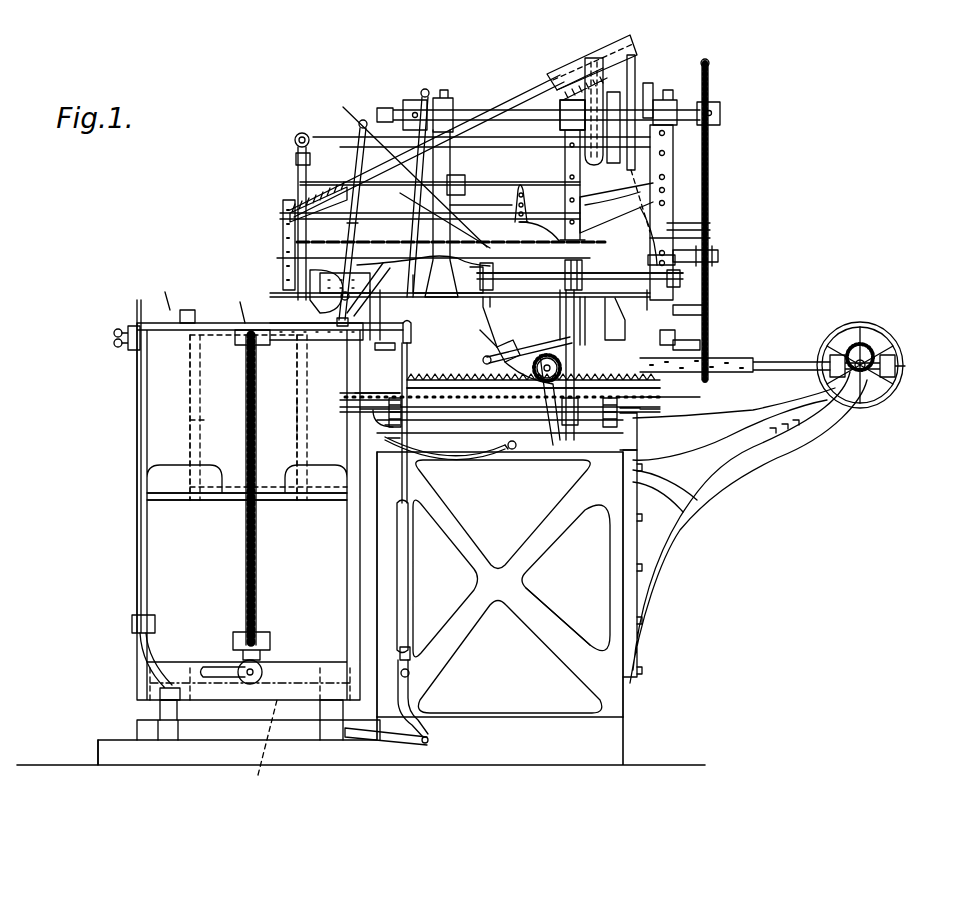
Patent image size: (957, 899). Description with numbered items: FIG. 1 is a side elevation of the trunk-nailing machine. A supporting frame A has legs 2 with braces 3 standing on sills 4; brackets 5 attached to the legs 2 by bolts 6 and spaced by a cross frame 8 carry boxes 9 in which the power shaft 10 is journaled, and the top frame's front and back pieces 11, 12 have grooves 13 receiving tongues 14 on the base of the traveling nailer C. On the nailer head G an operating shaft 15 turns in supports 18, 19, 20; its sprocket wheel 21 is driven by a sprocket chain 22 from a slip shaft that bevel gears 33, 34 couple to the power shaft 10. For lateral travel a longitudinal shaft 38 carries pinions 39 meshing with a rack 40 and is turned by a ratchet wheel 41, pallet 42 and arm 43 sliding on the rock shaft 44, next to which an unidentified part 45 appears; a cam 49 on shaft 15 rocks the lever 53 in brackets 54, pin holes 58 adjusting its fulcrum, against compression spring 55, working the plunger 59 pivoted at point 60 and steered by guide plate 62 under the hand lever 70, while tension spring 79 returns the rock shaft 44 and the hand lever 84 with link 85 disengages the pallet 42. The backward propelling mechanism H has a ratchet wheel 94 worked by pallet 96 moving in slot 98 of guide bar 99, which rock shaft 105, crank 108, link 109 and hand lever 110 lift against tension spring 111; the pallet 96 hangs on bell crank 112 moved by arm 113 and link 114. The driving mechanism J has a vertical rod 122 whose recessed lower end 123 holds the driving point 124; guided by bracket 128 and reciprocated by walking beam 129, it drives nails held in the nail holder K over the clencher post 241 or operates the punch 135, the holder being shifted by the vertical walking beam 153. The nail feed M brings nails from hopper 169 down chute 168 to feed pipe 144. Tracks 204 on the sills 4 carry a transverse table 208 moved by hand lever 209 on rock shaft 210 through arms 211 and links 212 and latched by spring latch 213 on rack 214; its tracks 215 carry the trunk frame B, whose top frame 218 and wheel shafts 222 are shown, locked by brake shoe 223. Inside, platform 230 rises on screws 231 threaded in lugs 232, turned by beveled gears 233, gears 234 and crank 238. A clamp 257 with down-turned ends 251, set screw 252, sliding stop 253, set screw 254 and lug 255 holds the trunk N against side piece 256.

The legs 2 is at (388, 547).
The braces 3 is at (560, 648).
The sills 4 is at (361, 741).
The brackets 5 is at (757, 466).
The bolts 6 is at (643, 672).
The cross frame 8 is at (800, 447).
The boxes 9 is at (905, 366).
The power shaft 10 is at (873, 357).
The front piece 11 is at (388, 438).
The back piece 12 is at (636, 430).
The grooves 13 is at (385, 425).
The tongues 14 is at (660, 410).
The operating shaft 15 is at (481, 105).
The support 18 is at (447, 184).
The support 19 is at (576, 181).
The support 20 is at (667, 227).
The sprocket wheel 21 is at (722, 108).
The sprocket chain 22 is at (710, 216).
The bevel gear 33 is at (847, 377).
The bevel gear 34 is at (864, 348).
The longitudinal shaft 38 is at (468, 412).
The pinion 39 is at (352, 393).
The rack 40 is at (383, 460).
The ratchet wheel 41 is at (568, 440).
The pallet 42 is at (585, 321).
The arm 43 is at (706, 310).
The rock shaft 44 is at (510, 274).
The pulley 45 is at (566, 267).
The cam 49 is at (654, 85).
The lever 53 is at (560, 170).
The brackets 54 is at (492, 206).
The compression spring 55 is at (655, 241).
The pin holes 58 is at (518, 192).
The plunger 59 is at (665, 235).
The point 60 is at (612, 196).
The guide plate 62 is at (617, 319).
The hand lever 70 is at (530, 243).
The tension spring 79 is at (701, 343).
The hand lever 84 is at (376, 344).
The link 85 is at (443, 450).
The ratchet wheel 94 is at (545, 404).
The pallet 96 is at (555, 432).
The slot 98 is at (565, 315).
The guide bar 99 is at (676, 335).
The rock shaft 105 is at (522, 344).
The crank 108 is at (497, 347).
The link 109 is at (480, 331).
The hand lever 110 is at (443, 267).
The tension spring 111 is at (500, 405).
The bell crank 112 is at (499, 322).
The arm 113 is at (402, 196).
The link 114 is at (448, 281).
The vertical rod 122 is at (293, 168).
The lower end 123 is at (312, 280).
The driving point 124 is at (318, 293).
The apertured bracket 128 is at (313, 182).
The walking beam 129 is at (371, 122).
The punch 135 is at (235, 345).
The feed pipe 144 is at (300, 296).
The vertical walking beam 153 is at (395, 167).
The chute 168 is at (490, 130).
The nail hopper 169 is at (606, 48).
The tracks 204 is at (62, 718).
The transverse table 208 is at (258, 732).
The hand lever 209 is at (409, 583).
The rock shaft 210 is at (410, 675).
The arms 211 is at (423, 712).
The links 212 is at (400, 734).
The spring latch 213 is at (425, 332).
The rack 214 is at (500, 462).
The tracks 215 is at (188, 719).
The top frame 218 is at (134, 350).
The shafts 222 is at (260, 745).
The brake shoe 223 is at (160, 697).
The horizontal platform 230 is at (278, 512).
The vertical screws 231 is at (258, 554).
The lugs 232 is at (258, 500).
The beveled gears 233 is at (285, 628).
The gears 234 is at (280, 665).
The crank 238 is at (218, 666).
The clencher post 241 is at (288, 425).
The down turned ends 251 is at (122, 330).
The set screw 252 is at (114, 334).
The sliding stop 253 is at (243, 302).
The set screw 254 is at (185, 310).
The lug 255 is at (174, 417).
The side piece 256 is at (280, 417).
The clamp 257 is at (165, 292).
The supporting frame A is at (533, 532).
The trunk frame B is at (270, 511).
The traveling nailer C is at (674, 150).
The head G is at (580, 263).
The backward propelling mechanism H is at (547, 347).
The driving mechanism J is at (299, 133).
The nail holder K is at (298, 292).
The nail feed M is at (548, 84).
The trunk N is at (208, 420).